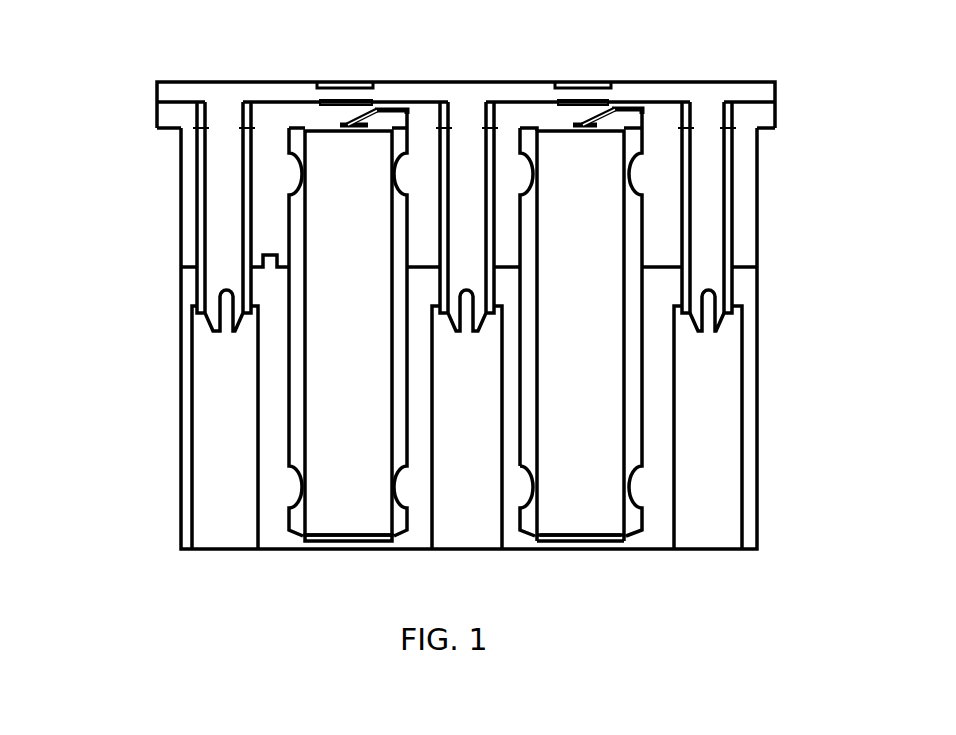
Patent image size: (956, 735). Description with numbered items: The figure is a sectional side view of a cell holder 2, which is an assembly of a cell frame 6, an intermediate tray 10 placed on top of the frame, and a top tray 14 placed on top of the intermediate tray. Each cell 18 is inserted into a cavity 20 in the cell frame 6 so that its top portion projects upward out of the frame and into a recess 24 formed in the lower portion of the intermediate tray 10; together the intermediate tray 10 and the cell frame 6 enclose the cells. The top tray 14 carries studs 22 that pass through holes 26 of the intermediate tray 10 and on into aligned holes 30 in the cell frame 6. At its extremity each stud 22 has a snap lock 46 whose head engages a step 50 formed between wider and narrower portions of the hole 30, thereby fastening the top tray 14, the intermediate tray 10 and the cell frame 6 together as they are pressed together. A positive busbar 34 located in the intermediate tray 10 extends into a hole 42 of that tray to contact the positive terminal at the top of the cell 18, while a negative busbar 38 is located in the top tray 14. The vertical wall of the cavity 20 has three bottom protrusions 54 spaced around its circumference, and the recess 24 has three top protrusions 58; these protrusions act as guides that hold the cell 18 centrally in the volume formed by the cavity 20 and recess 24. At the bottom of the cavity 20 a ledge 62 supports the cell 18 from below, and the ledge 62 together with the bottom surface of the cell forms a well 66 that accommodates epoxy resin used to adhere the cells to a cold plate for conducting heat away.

The cell holder 2 is at (118, 45).
The cell frame 6 is at (758, 445).
The intermediate tray 10 is at (777, 115).
The top tray 14 is at (777, 90).
The cell 18 is at (606, 538).
The cavity 20 is at (525, 410).
The stud 22 is at (737, 208).
The recess 24 is at (537, 142).
The hole 26 is at (737, 173).
The hole 30 is at (743, 481).
The positive busbar 34 is at (641, 107).
The negative busbar 38 is at (600, 82).
The hole 42 is at (558, 126).
The snap lock 46 is at (727, 333).
The step 50 is at (736, 315).
The bottom protrusions 54 is at (534, 468).
The top protrusions 58 is at (533, 192).
The ledge 62 is at (547, 547).
The well 66 is at (588, 542).